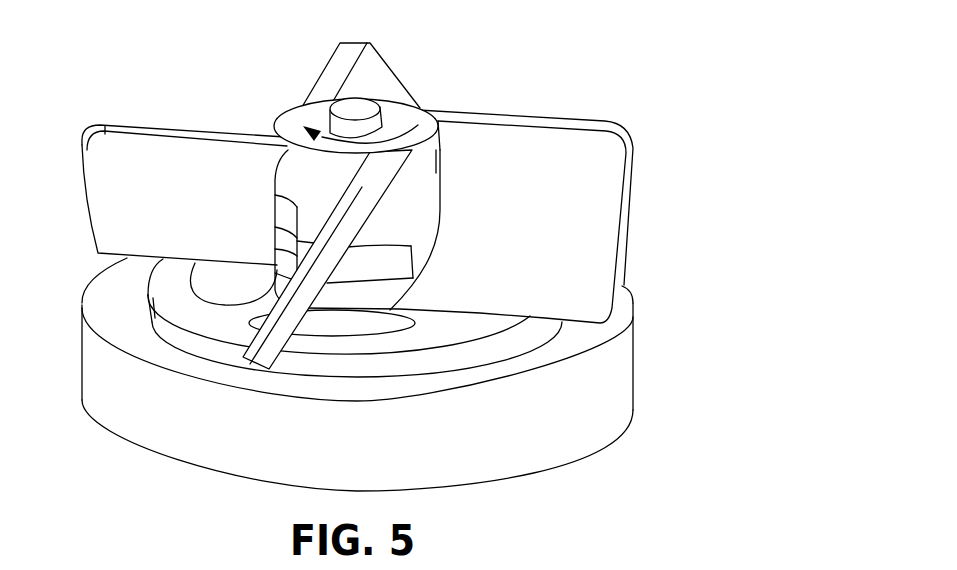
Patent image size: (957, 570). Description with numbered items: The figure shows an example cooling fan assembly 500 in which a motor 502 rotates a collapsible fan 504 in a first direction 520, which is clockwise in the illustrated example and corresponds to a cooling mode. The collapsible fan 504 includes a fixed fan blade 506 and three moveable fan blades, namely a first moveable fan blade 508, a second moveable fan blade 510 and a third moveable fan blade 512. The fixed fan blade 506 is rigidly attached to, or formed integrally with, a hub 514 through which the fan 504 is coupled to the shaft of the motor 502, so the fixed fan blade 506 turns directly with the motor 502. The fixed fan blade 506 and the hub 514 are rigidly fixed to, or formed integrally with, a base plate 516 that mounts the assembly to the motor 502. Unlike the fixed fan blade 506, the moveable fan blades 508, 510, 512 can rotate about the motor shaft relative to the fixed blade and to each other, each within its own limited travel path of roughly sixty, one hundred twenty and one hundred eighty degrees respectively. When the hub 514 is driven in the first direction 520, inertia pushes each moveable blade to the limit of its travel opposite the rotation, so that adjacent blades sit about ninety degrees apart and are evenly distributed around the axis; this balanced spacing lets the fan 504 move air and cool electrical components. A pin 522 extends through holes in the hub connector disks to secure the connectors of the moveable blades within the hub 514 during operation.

The cooling fan assembly 500 is at (173, 44).
The motor 502 is at (82, 369).
The collapsible fan 504 is at (652, 231).
The fixed fan blade 506 is at (573, 121).
The first moveable fan blade 508 is at (359, 43).
The second moveable fan blade 510 is at (132, 128).
The third moveable fan blade 512 is at (242, 357).
The hub 514 is at (400, 108).
The base plate 516 is at (475, 352).
The first direction 520 is at (323, 135).
The pin 522 is at (360, 107).